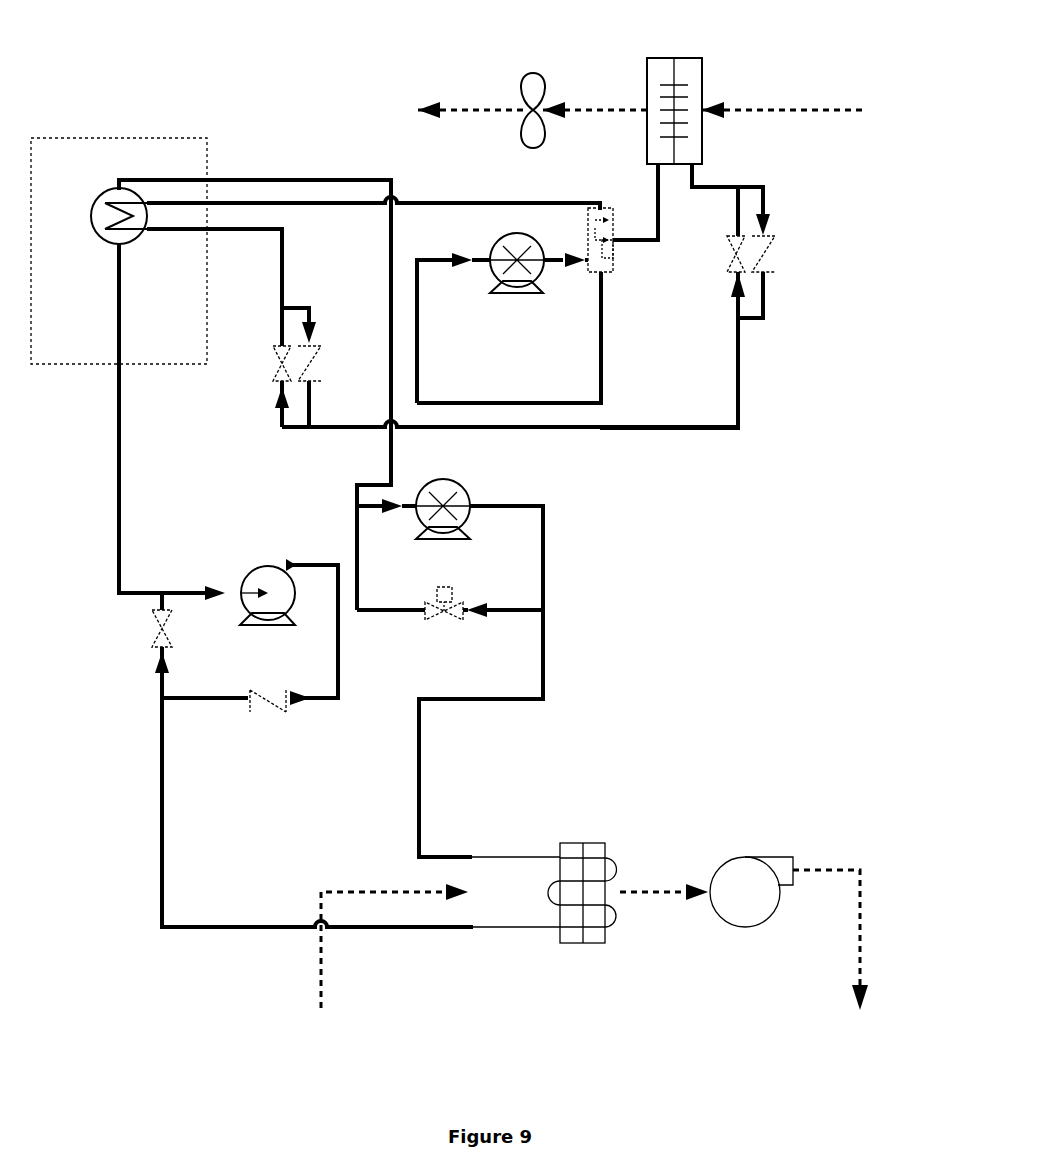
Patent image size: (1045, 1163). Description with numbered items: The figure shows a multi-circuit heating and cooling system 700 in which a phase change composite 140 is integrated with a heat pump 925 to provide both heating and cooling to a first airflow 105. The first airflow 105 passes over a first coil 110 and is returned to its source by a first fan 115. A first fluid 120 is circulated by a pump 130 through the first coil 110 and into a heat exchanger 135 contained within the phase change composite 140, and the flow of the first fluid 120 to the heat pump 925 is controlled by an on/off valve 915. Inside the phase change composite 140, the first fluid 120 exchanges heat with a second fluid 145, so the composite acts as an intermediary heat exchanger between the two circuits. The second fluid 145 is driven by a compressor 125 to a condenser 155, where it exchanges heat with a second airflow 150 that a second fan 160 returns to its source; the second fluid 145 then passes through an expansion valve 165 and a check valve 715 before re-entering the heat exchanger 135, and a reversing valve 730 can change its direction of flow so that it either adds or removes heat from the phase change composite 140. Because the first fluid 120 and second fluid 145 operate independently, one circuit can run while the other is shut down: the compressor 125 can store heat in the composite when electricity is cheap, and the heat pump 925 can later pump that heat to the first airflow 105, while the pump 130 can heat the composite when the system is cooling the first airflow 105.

The first airflow 105 is at (378, 973).
The first coil 110 is at (628, 912).
The first fan 115 is at (789, 933).
The first fluid 120 is at (231, 946).
The compressor 125 is at (517, 275).
The pump 130 is at (267, 614).
The heat exchanger 135 is at (98, 234).
The phase change composite 140 is at (119, 234).
The second fluid 145 is at (677, 401).
The second airflow 150 is at (683, 116).
The condenser 155 is at (674, 94).
The second fan 160 is at (534, 95).
The expansion valve 165 is at (422, 442).
The multi-circuit heating and cooling system 700 is at (680, 695).
The check valve 715 is at (547, 493).
The reversing valve 730 is at (618, 252).
The on/off valve 915 is at (444, 618).
The heat pump 925 is at (443, 519).